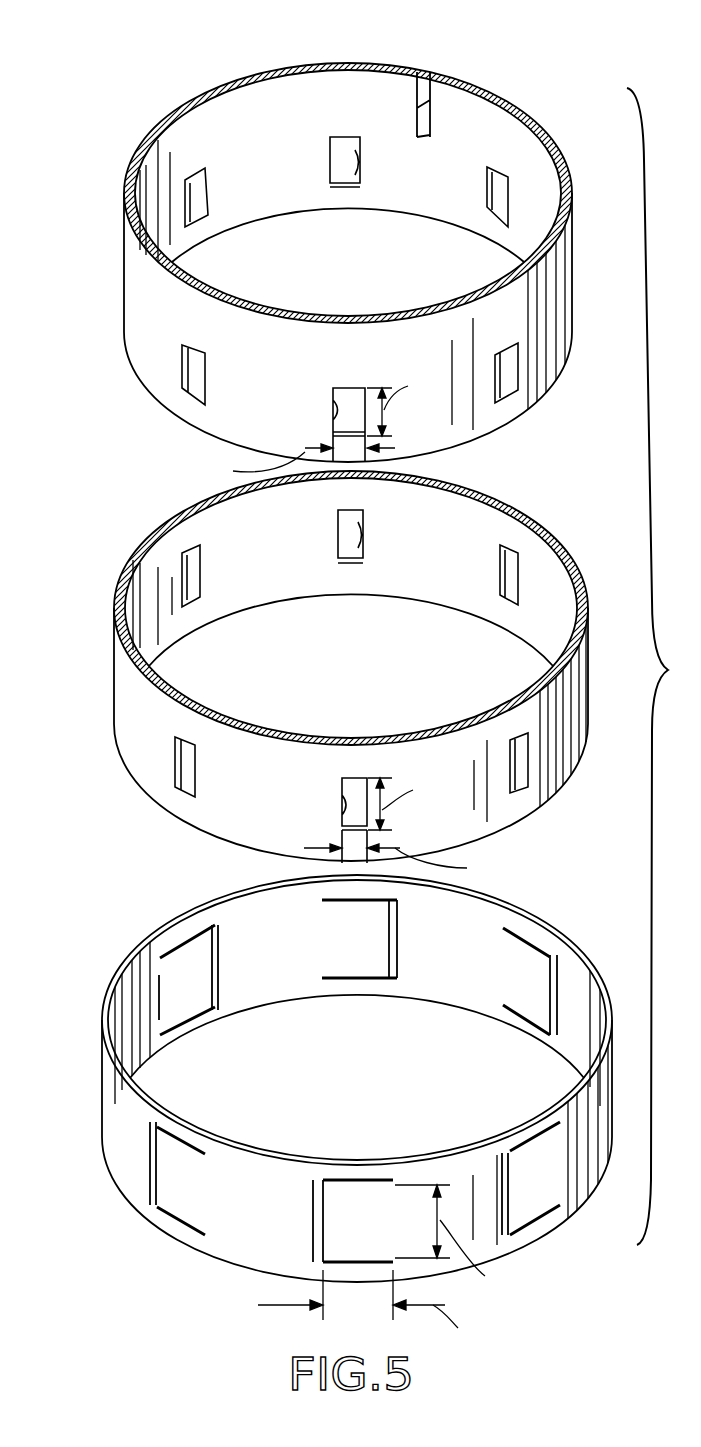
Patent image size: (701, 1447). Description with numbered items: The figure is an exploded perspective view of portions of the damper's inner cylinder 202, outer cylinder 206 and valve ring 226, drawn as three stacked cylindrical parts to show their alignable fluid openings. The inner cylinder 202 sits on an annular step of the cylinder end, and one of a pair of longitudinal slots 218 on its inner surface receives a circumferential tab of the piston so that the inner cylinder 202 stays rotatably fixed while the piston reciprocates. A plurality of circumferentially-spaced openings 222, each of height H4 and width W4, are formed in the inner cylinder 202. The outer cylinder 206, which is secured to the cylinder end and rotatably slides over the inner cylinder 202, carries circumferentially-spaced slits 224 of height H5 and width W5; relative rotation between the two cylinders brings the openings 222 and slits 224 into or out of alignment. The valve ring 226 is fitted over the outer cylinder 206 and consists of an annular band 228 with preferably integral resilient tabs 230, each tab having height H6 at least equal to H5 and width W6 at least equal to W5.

The inner cylinder 202 is at (312, 244).
The outer cylinder 206 is at (310, 677).
The valve ring 226 is at (324, 1110).
The longitudinal slot 218 is at (416, 101).
The openings 222 is at (487, 200).
The slits 224 is at (500, 585).
The annular band 228 is at (133, 1190).
The resilient tabs 230 is at (530, 980).